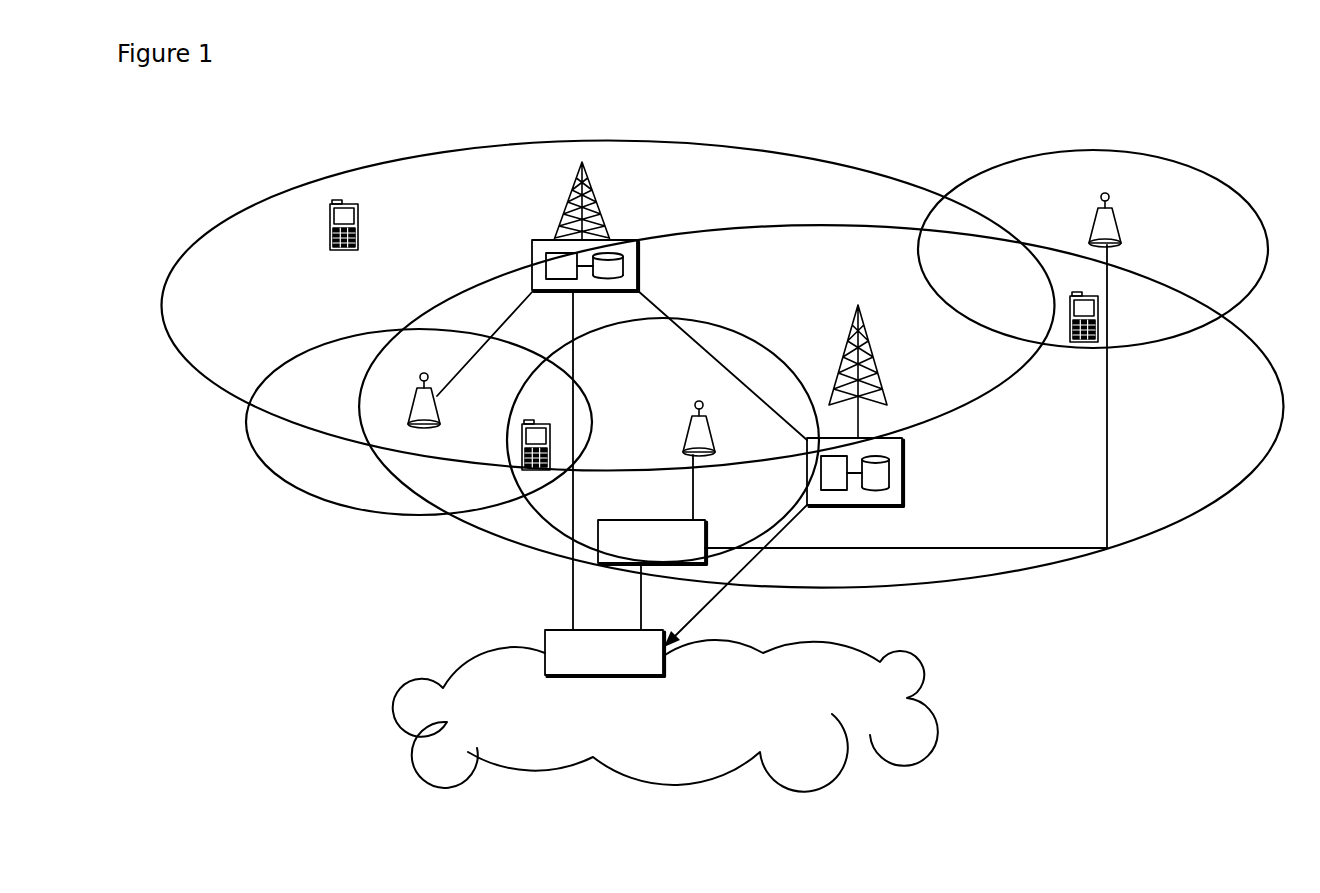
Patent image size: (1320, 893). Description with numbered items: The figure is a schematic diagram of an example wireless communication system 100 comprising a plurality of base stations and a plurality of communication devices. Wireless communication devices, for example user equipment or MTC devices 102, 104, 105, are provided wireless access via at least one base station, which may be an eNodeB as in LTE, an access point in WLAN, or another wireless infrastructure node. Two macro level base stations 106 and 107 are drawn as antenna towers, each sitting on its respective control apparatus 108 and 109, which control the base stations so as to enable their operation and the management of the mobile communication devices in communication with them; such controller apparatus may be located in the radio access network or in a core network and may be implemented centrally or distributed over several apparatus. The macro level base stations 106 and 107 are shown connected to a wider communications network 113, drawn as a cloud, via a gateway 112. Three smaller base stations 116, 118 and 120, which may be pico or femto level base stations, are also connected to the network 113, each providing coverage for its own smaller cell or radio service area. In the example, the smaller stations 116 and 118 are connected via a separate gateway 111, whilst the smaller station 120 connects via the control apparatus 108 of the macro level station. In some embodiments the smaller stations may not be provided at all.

The wireless communication system 100 is at (252, 188).
The user equipment 102 is at (328, 240).
The user equipment 104 is at (522, 448).
The user equipment 105 is at (1085, 343).
The macro level base station 106 is at (562, 212).
The macro level base station 107 is at (880, 372).
The control apparatus 108 is at (532, 255).
The control apparatus 109 is at (893, 497).
The gateway 111 is at (605, 548).
The gateway 112 is at (545, 630).
The wider communications network 113 is at (472, 683).
The smaller base station 116 is at (1093, 220).
The smaller base station 118 is at (696, 440).
The smaller base station 120 is at (415, 405).